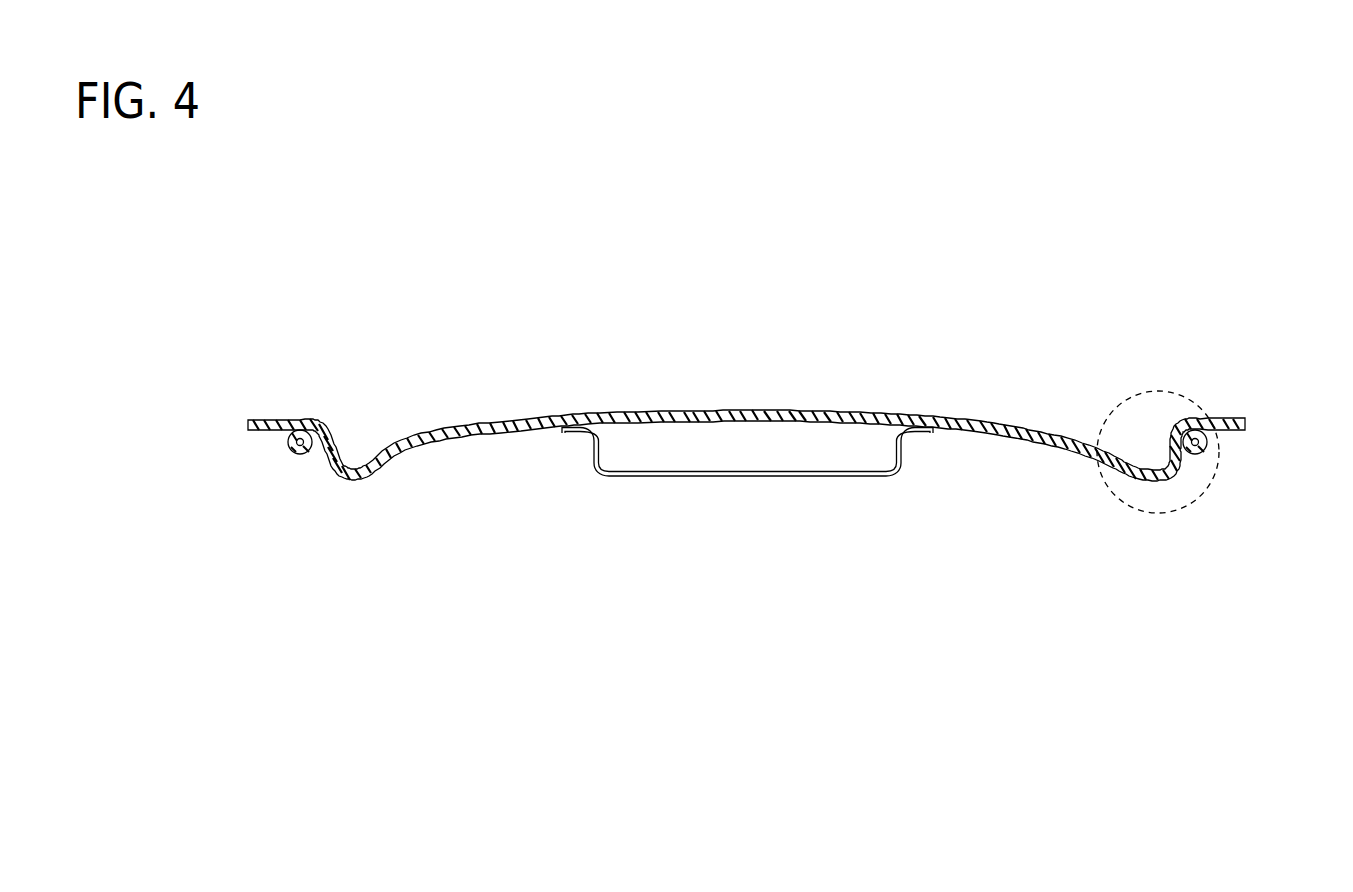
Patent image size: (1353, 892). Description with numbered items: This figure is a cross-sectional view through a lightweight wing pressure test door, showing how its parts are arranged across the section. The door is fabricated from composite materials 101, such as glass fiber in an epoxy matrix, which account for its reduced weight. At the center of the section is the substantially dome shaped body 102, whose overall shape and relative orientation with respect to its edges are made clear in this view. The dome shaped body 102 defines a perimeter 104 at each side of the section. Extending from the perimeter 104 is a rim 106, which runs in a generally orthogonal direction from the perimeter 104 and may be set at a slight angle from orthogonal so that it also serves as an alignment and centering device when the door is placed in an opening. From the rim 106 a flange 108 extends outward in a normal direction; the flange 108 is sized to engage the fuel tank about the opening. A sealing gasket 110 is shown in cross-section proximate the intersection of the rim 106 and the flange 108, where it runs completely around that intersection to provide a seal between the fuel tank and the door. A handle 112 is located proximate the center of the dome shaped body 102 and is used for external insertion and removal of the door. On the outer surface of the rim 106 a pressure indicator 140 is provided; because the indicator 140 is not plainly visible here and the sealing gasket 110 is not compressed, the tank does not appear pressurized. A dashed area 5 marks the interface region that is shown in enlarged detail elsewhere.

The area 5 is at (1187, 397).
The composite materials 101 is at (1037, 437).
The dome shaped body 102 is at (993, 422).
The perimeter 104 is at (343, 480).
The rim 106 is at (333, 457).
The flange 108 is at (277, 418).
The sealing gasket 110 is at (290, 442).
The handle 112 is at (753, 478).
The pressure indicator 140 is at (317, 462).